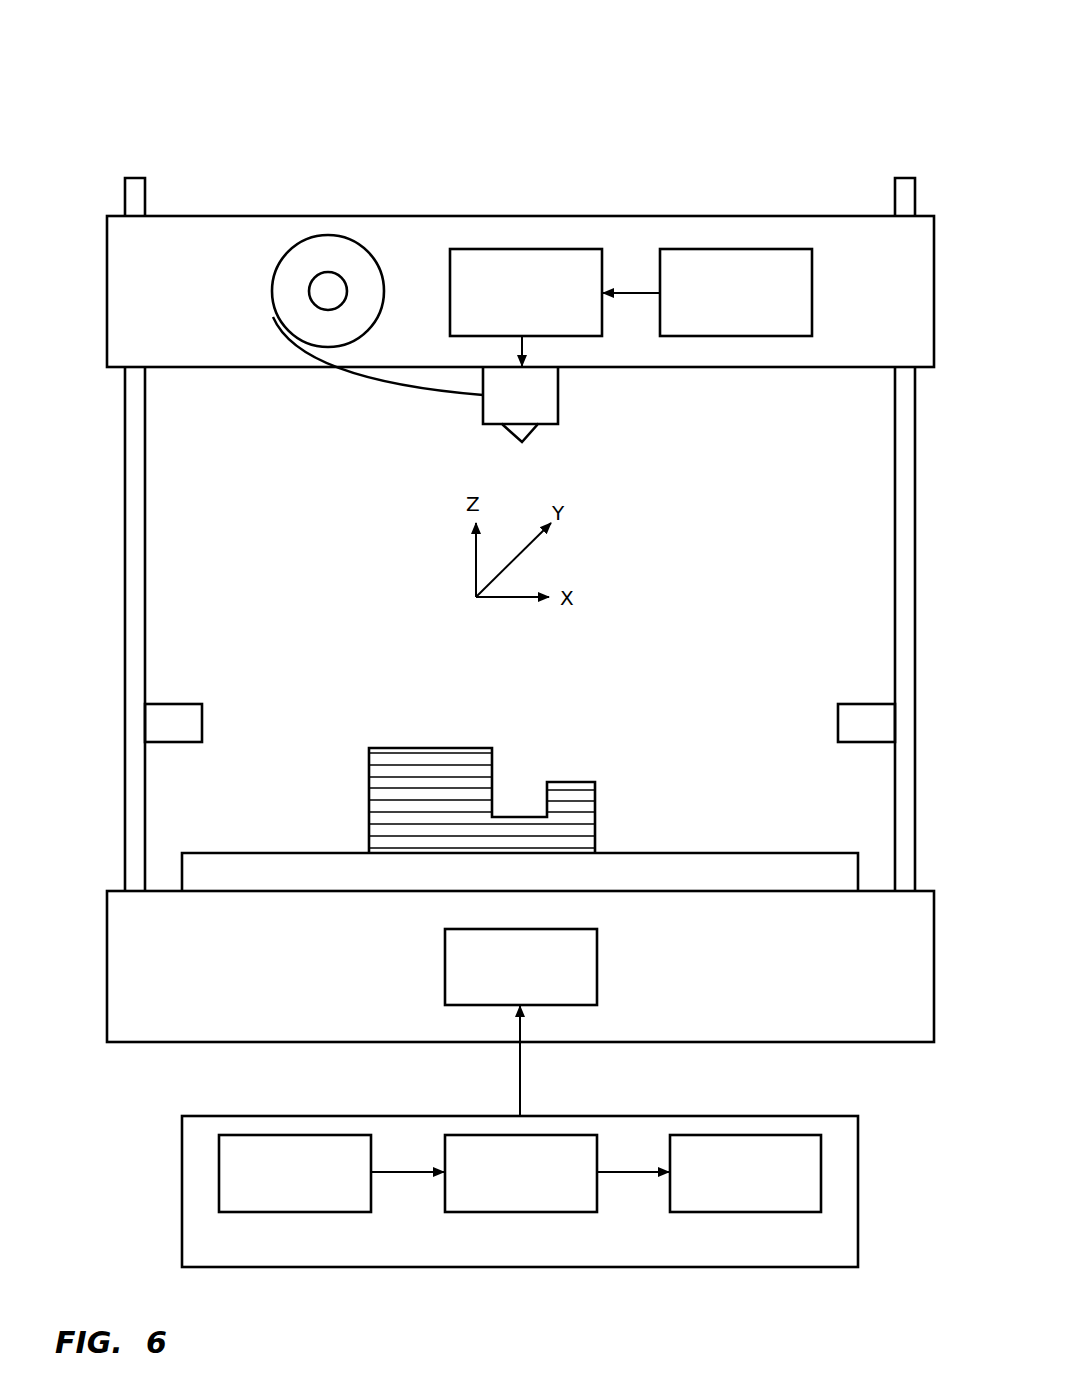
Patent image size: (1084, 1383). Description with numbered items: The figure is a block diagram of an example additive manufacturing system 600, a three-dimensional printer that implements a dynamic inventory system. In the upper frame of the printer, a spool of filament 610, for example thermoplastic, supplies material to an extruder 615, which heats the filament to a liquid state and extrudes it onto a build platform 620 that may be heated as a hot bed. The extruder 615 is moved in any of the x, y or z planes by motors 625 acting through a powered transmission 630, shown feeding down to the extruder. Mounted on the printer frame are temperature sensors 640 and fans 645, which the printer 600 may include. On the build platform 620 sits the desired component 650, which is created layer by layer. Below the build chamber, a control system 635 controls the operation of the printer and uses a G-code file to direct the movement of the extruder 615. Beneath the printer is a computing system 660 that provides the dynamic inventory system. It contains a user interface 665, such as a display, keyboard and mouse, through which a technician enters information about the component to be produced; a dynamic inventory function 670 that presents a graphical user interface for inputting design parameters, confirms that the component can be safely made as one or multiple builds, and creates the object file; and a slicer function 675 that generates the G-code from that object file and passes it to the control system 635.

The additive manufacturing system 600 is at (884, 96).
The spool of filament 610 is at (272, 298).
The extruder 615 is at (558, 395).
The build platform 620 is at (785, 853).
The motors 625 is at (812, 290).
The powered transmission 630 is at (450, 298).
The control system 635 is at (597, 955).
The temperature sensors 640 is at (202, 717).
The fans 645 is at (838, 735).
The component 650 is at (595, 810).
The computing system 660 is at (182, 1178).
The user interface 665 is at (305, 1212).
The dynamic inventory function 670 is at (530, 1212).
The slicer function 675 is at (755, 1212).